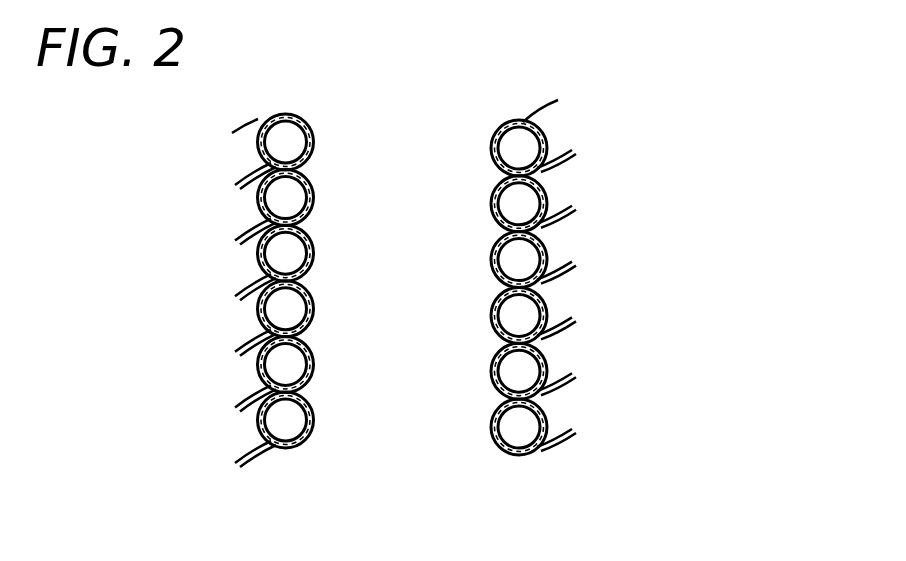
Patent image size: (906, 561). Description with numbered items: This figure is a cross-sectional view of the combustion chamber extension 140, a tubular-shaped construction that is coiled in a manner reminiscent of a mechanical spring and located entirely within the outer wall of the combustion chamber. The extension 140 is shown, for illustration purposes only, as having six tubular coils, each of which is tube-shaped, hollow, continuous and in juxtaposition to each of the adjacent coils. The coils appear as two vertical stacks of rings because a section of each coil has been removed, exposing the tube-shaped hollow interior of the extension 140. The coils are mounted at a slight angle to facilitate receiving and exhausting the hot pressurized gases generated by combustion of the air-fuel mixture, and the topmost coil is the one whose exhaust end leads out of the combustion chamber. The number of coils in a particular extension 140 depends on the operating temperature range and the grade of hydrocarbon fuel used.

The combustion chamber extension 140 is at (627, 263).